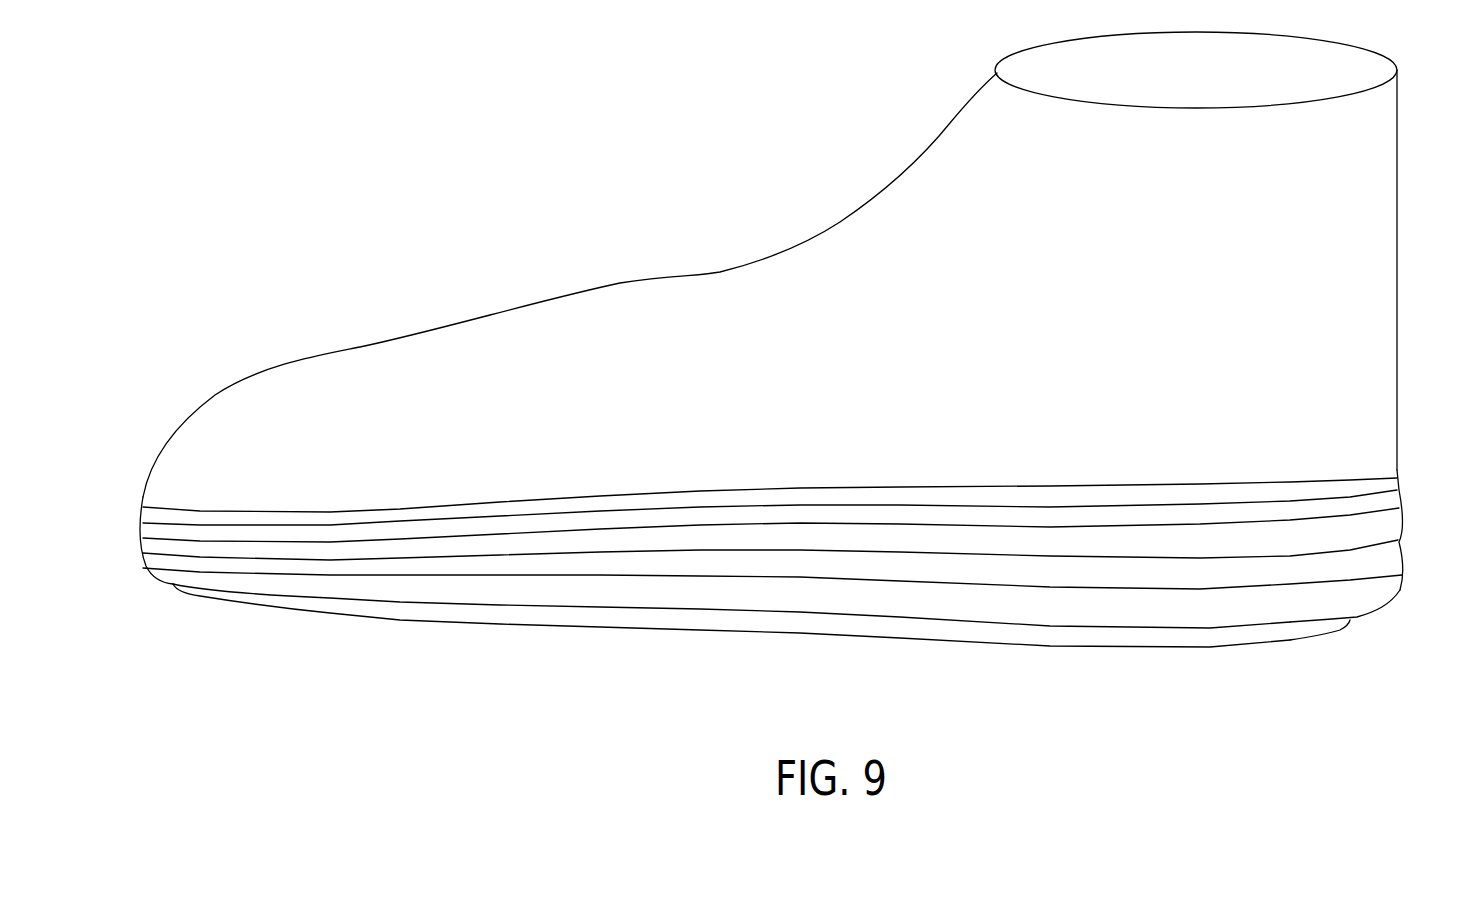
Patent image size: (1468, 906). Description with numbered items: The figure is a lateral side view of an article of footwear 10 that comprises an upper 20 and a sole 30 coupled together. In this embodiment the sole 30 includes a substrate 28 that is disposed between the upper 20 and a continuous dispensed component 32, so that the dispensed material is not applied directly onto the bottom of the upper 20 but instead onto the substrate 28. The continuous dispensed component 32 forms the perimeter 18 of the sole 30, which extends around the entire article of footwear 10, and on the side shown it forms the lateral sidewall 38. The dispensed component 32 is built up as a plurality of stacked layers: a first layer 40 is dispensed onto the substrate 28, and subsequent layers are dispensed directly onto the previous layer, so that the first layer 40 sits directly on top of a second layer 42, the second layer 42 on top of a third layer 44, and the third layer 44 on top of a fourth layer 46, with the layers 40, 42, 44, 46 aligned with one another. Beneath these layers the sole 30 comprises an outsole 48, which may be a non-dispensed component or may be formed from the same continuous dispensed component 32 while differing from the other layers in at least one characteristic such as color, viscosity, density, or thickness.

The article of footwear 10 is at (472, 122).
The perimeter 18 is at (141, 548).
The upper 20 is at (840, 242).
The substrate 28 is at (1390, 477).
The sole 30 is at (1392, 557).
The dispensed component 32 is at (447, 565).
The lateral sidewall 38 is at (683, 565).
The first layer 40 is at (1102, 520).
The second layer 42 is at (1187, 547).
The third layer 44 is at (1065, 572).
The fourth layer 46 is at (1178, 617).
The outsole 48 is at (970, 633).